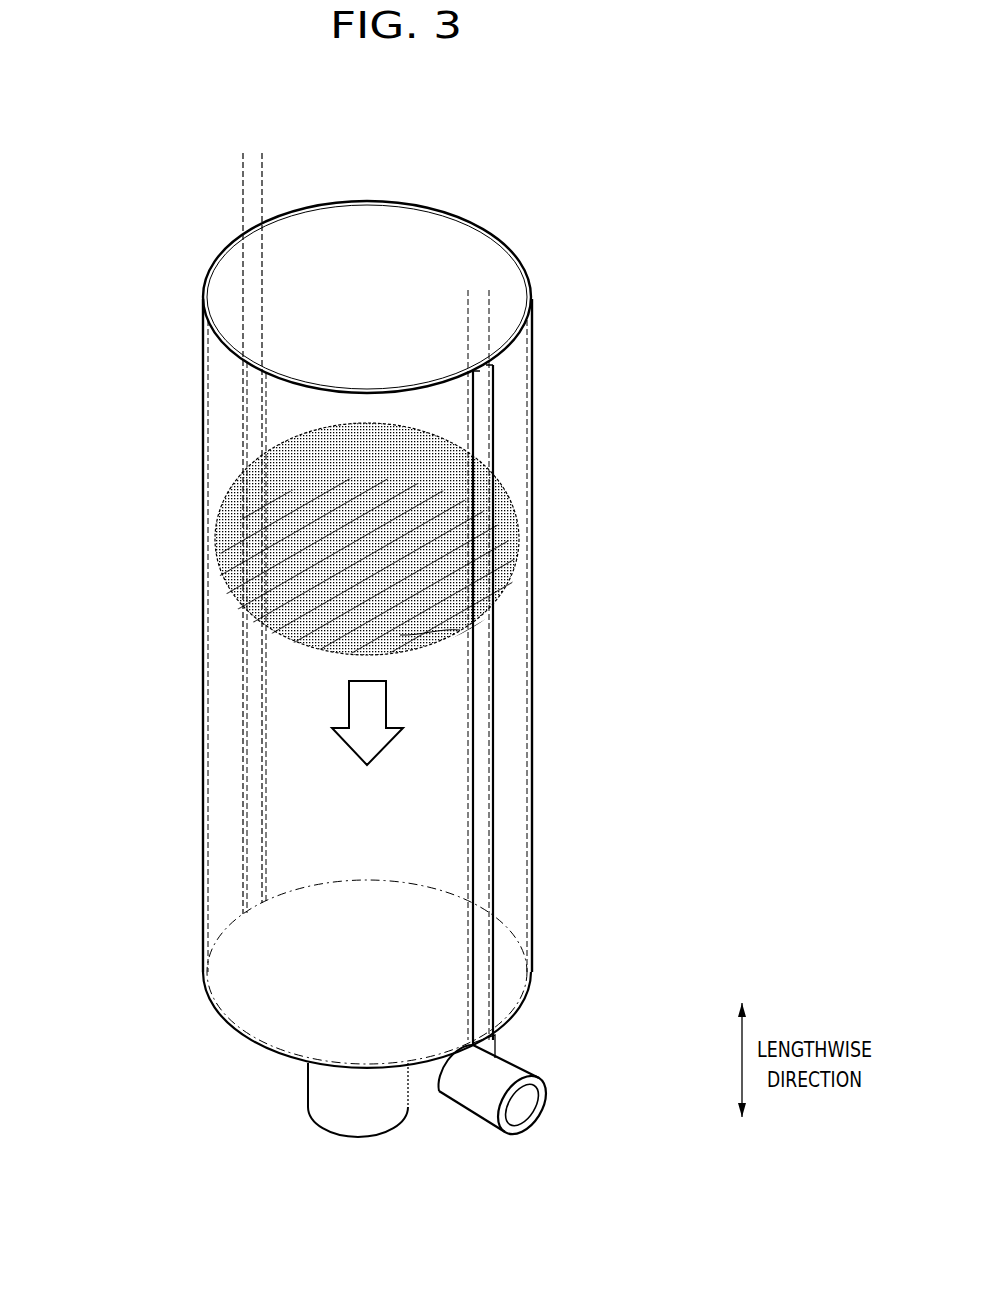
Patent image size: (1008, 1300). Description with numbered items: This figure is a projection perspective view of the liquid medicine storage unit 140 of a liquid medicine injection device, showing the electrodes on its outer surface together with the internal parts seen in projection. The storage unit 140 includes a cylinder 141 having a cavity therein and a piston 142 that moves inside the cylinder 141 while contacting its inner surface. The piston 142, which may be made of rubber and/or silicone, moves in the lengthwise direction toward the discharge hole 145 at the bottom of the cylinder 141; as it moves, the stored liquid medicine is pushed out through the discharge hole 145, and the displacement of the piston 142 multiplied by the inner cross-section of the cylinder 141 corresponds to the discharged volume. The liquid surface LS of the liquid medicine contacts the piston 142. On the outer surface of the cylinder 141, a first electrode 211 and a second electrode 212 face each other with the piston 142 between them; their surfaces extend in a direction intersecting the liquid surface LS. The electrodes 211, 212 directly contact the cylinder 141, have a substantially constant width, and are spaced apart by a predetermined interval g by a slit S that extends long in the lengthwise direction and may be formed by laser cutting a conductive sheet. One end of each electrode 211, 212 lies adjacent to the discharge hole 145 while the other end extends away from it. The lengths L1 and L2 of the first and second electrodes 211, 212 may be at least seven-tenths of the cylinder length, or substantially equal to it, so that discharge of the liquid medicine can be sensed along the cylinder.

The liquid medicine storage unit 140 is at (470, 212).
The cylinder 141 is at (505, 427).
The piston 142 is at (520, 565).
The discharge hole 145 is at (480, 1098).
The first electrode 211 is at (203, 384).
The second electrode 212 is at (533, 378).
The slit S is at (255, 287).
The liquid surface LS is at (460, 630).
The predetermined interval g is at (215, 190).
The length of the first electrode L1 is at (200, 299).
The length of the second electrode L2 is at (533, 299).